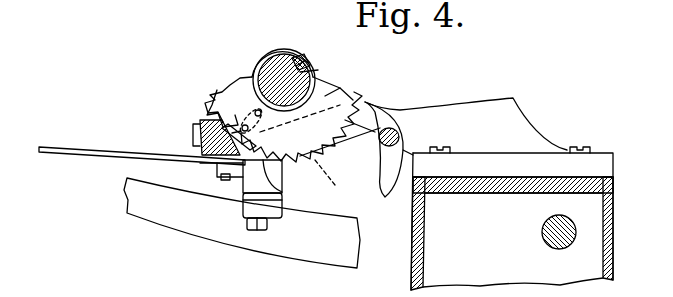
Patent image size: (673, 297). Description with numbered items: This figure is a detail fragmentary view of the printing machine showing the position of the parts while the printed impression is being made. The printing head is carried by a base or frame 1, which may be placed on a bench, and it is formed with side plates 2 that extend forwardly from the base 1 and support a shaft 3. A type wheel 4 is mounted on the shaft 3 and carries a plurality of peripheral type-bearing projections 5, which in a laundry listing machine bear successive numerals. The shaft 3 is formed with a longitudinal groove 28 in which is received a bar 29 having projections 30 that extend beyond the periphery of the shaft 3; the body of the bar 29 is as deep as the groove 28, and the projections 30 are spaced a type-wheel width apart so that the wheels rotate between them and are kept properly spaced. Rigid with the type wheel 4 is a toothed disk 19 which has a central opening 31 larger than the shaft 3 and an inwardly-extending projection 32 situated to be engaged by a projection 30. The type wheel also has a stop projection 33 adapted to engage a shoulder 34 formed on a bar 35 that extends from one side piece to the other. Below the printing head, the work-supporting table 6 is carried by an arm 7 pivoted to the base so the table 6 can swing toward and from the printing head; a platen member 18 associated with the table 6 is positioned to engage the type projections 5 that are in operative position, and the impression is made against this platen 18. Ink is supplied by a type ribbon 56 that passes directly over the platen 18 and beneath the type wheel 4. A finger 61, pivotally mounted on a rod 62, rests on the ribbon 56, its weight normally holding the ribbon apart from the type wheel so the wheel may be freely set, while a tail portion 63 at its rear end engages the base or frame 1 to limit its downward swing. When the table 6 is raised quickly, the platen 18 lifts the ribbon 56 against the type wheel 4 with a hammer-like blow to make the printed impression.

The base or frame 1 is at (614, 222).
The side plates 2 is at (379, 105).
The shaft 3 is at (278, 62).
The type wheel 4 is at (320, 152).
The type-bearing projections 5 is at (352, 146).
The table 6 is at (82, 148).
The arm 7 is at (312, 252).
The platen member 18 is at (270, 172).
The toothed disk 19 is at (332, 94).
The groove 28 is at (318, 70).
The bar 29 is at (303, 64).
The projections 30 is at (300, 51).
The central opening 31 is at (252, 75).
The inwardly-extending projection 32 is at (301, 57).
The stop projection 33 is at (215, 160).
The shoulder 34 is at (226, 179).
The bar 35 is at (200, 145).
The type ribbon 56 is at (282, 198).
The fingers 61 is at (325, 160).
The rod 62 is at (405, 123).
The tail portion 63 is at (383, 191).